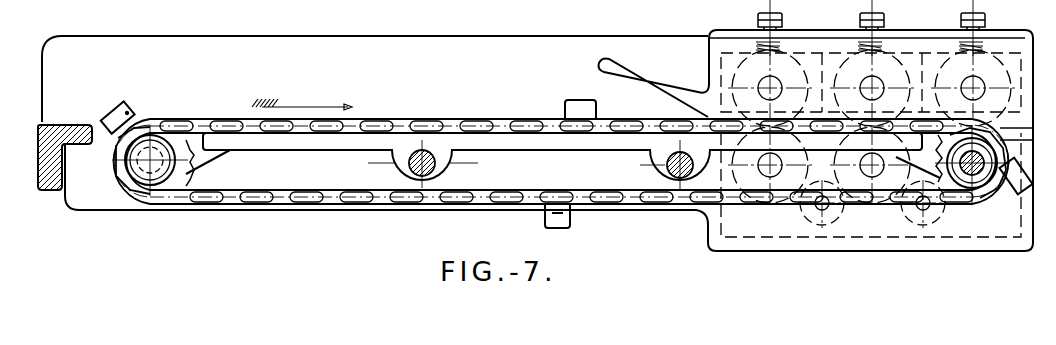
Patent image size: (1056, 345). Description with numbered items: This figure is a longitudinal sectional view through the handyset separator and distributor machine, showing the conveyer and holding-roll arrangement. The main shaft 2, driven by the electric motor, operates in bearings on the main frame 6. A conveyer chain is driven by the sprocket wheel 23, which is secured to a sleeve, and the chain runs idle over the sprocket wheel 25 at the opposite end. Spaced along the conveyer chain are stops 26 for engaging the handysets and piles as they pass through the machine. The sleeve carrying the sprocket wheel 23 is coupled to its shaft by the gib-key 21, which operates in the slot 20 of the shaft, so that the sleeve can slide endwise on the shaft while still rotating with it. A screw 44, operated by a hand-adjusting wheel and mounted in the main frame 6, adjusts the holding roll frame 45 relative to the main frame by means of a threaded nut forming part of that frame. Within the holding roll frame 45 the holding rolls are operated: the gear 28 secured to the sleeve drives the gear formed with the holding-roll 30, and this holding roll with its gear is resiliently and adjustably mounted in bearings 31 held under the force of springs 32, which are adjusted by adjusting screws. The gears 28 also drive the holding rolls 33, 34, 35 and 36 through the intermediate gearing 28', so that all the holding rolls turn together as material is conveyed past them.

The main shaft 2 is at (432, 157).
The main frame 6 is at (38, 135).
The slot 20 is at (1000, 165).
The gib-key 21 is at (980, 151).
The sprocket wheel 23 is at (940, 128).
The sprocket wheel 25 is at (430, 128).
The stops 26 is at (113, 109).
The gear 28 is at (883, 241).
The intermediate gearing 28' is at (894, 262).
The holding-roll 30 is at (973, 85).
The bearings 31 is at (871, 145).
The springs 32 is at (778, 47).
The holding roll 33 is at (872, 165).
The holding roll 34 is at (872, 85).
The holding roll 35 is at (770, 165).
The holding roll 36 is at (770, 85).
The screw 44 is at (686, 157).
The holding roll frame 45 is at (537, 140).